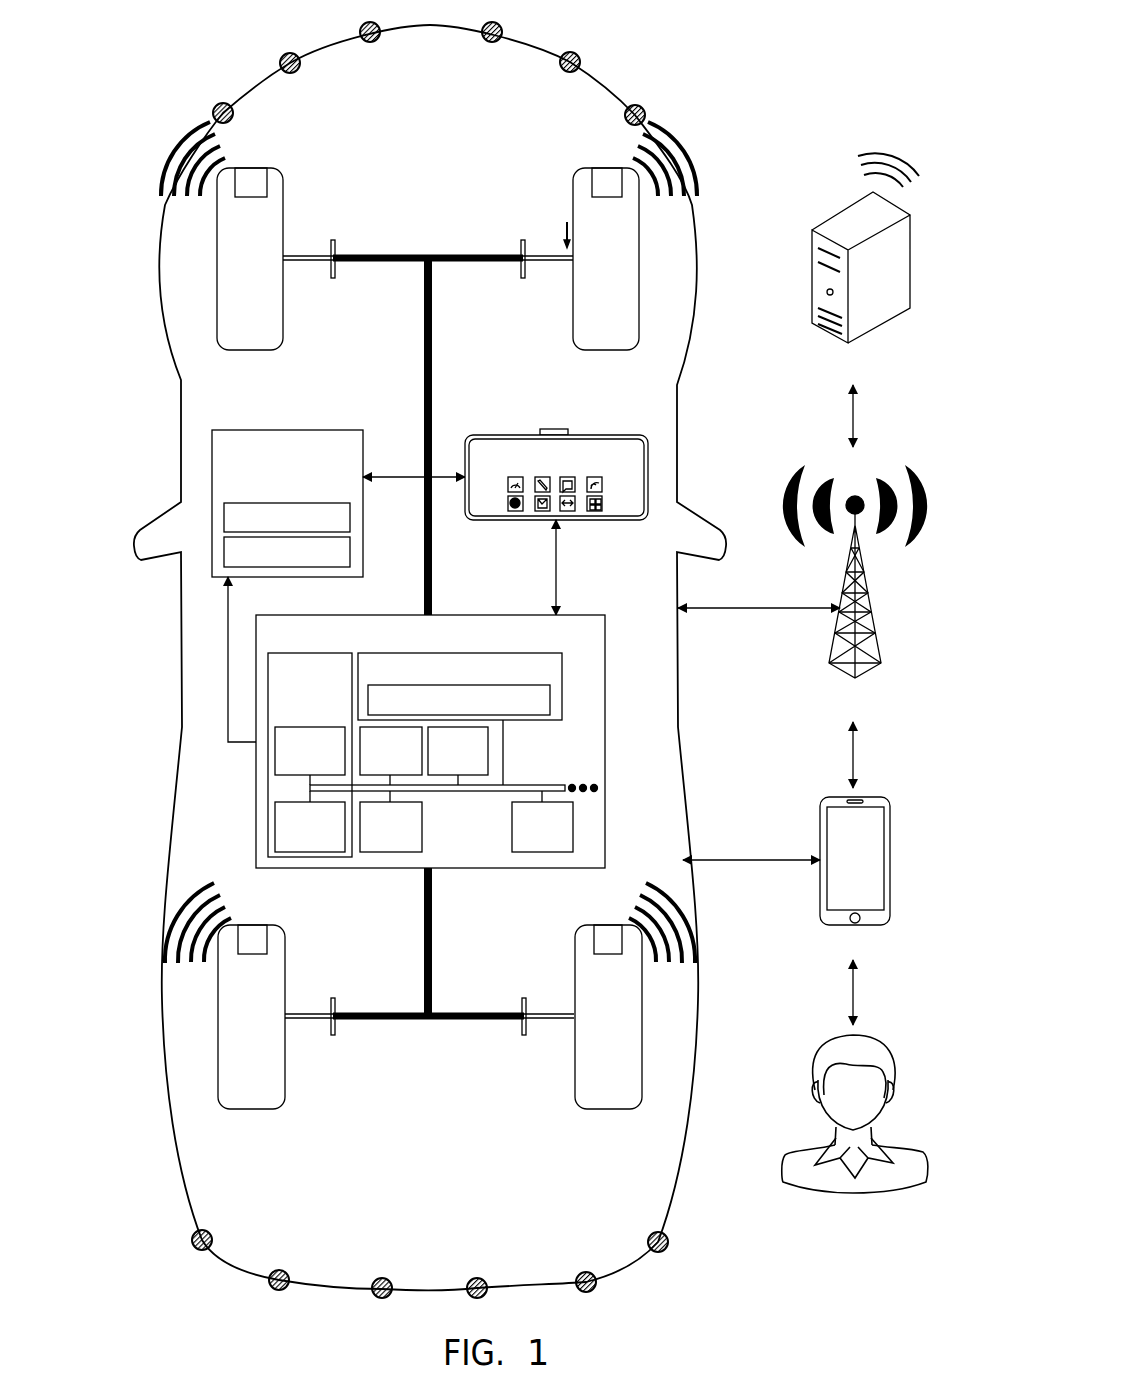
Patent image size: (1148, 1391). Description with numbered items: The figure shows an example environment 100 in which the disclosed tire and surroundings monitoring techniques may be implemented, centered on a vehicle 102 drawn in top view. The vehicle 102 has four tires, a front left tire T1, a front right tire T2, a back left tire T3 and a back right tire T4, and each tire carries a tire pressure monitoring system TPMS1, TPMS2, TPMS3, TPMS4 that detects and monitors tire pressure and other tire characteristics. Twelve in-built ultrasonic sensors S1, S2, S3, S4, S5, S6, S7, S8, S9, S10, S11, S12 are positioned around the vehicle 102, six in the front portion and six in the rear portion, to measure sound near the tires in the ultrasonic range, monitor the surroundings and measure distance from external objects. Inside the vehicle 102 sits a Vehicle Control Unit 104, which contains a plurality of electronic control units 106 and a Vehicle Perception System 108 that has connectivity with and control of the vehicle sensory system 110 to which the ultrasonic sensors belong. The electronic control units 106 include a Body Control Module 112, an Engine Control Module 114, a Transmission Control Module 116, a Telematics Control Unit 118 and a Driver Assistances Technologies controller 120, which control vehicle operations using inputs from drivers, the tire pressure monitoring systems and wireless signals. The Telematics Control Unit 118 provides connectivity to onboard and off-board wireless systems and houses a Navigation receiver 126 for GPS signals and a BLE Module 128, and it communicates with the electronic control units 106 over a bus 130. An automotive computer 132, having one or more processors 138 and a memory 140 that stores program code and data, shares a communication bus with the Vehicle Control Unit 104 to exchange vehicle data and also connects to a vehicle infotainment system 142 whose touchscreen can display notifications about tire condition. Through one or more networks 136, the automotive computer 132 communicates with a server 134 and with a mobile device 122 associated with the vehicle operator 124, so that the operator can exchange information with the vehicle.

The environment 100 is at (831, 49).
The vehicle 102 is at (162, 1033).
The Vehicle Control Unit (VCU) 104 is at (420, 763).
The electronic control units (ECUs) 106 is at (582, 733).
The Vehicle Perception System (VPS) 108 is at (551, 674).
The vehicle sensory system 110 is at (550, 698).
The Body Control Module (BCM) 112 is at (415, 775).
The Engine Control Module (ECM) 114 is at (468, 775).
The Transmission Control Module (TCM) 116 is at (373, 852).
The Telematics Control Unit (TCU) 118 is at (268, 680).
The Driver Assistances Technologies (DAT) controller 120 is at (573, 828).
The mobile device 122 is at (888, 798).
The vehicle operator 124 is at (815, 1068).
The Navigation (NAV) receiver 126 is at (275, 765).
The BLE Module (BLEM) 128 is at (275, 828).
The bus 130 is at (548, 786).
The automotive computer 132 is at (215, 511).
The server 134 is at (838, 212).
The network 136 is at (868, 580).
The processor 138 is at (224, 512).
The memory 140 is at (224, 552).
The vehicle infotainment system 142 is at (648, 462).
The ultrasonic sensor S1 is at (192, 1240).
The ultrasonic sensor S2 is at (279, 1270).
The ultrasonic sensor S3 is at (382, 1278).
The ultrasonic sensor S4 is at (477, 1278).
The ultrasonic sensor S5 is at (586, 1272).
The ultrasonic sensor S6 is at (668, 1242).
The ultrasonic sensor S7 is at (213, 113).
The ultrasonic sensor S8 is at (290, 73).
The ultrasonic sensor S9 is at (370, 42).
The ultrasonic sensor S10 is at (492, 42).
The ultrasonic sensor S11 is at (570, 72).
The ultrasonic sensor S12 is at (645, 113).
The front left tire T1 is at (222, 236).
The front right tire T2 is at (635, 236).
The back left tire T3 is at (225, 1014).
The back right tire T4 is at (635, 1014).
The tire pressure monitoring system TPMS1 is at (327, 190).
The tire pressure monitoring system TPMS2 is at (530, 190).
The tire pressure monitoring system TPMS3 is at (327, 948).
The tire pressure monitoring system TPMS4 is at (531, 941).